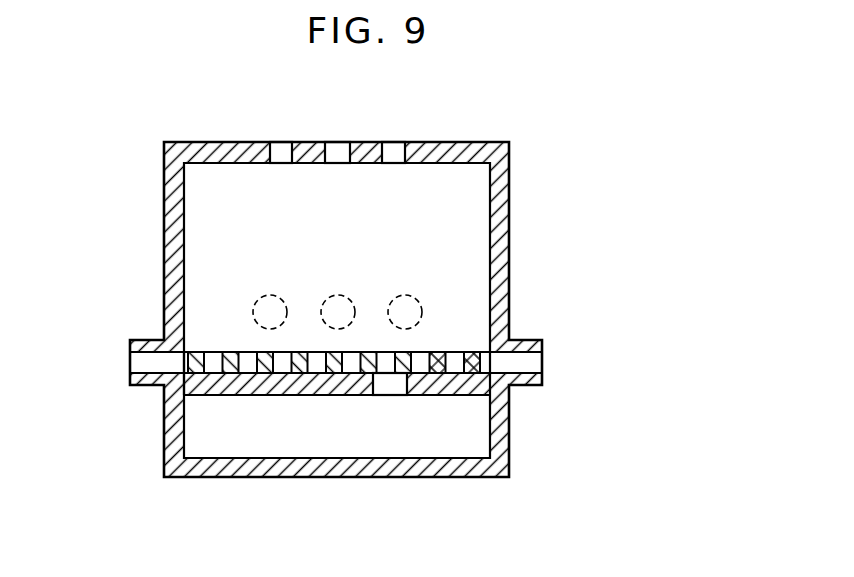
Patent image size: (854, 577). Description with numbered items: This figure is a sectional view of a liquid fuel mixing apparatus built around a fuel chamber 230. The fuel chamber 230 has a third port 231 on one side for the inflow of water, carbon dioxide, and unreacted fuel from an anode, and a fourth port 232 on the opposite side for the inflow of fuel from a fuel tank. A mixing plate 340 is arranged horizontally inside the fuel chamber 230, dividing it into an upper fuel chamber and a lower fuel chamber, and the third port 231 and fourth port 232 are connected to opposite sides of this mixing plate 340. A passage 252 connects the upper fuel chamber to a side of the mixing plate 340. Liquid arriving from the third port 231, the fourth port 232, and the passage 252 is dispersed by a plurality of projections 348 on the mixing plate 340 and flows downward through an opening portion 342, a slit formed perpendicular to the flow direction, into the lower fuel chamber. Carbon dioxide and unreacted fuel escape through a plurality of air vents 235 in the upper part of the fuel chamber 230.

The fuel chamber 230 is at (402, 319).
The third port 231 is at (151, 385).
The fourth port 232 is at (532, 362).
The air vents 235 is at (280, 152).
The passage 252 is at (252, 306).
The mixing plate 340 is at (337, 447).
The opening portion 342 is at (393, 386).
The projections 348 is at (440, 364).